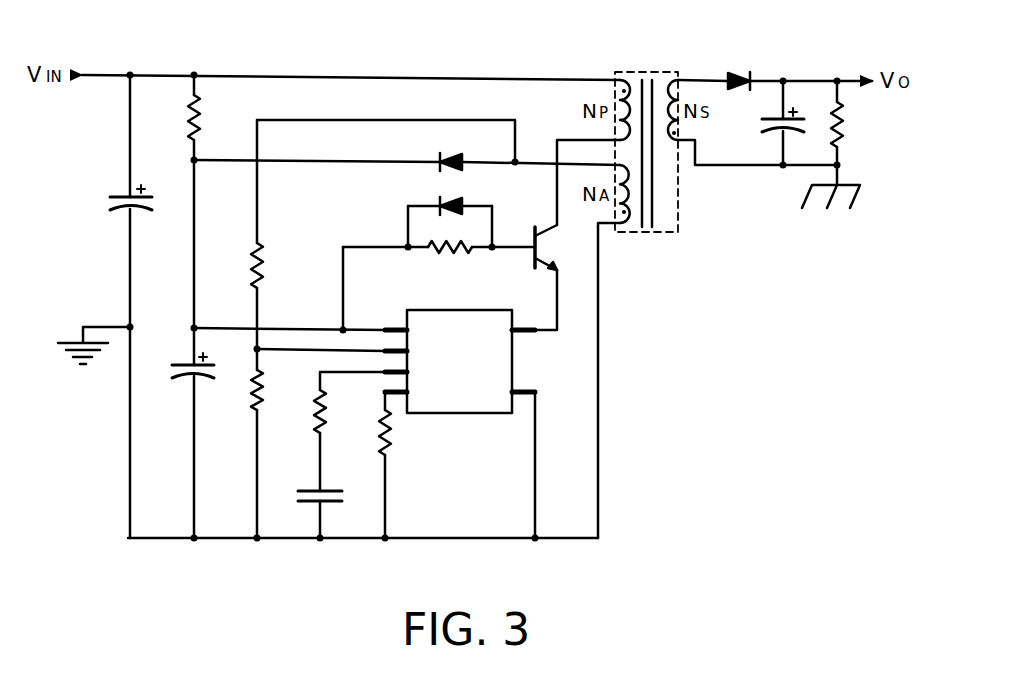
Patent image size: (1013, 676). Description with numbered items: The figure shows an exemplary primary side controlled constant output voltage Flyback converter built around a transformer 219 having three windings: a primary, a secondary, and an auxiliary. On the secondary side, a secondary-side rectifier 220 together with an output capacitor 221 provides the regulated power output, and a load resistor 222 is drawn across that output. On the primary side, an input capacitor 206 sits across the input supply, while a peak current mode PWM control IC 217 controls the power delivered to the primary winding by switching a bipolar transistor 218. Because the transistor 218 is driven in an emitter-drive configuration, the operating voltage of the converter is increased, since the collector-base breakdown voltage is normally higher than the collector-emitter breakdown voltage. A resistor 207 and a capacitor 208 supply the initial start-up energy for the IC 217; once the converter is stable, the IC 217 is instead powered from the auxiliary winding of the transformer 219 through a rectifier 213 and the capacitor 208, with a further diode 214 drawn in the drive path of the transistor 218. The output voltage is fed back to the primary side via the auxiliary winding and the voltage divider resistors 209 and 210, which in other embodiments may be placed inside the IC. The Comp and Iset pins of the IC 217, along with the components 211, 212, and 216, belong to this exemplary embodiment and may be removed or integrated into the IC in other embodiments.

The input filter capacitor 206 is at (146, 211).
The resistor 207 is at (203, 108).
The capacitor 208 is at (203, 379).
The voltage divider resistor 209 is at (265, 268).
The voltage divider resistor 210 is at (265, 395).
The component 211 is at (328, 415).
The component 212 is at (328, 503).
The rectifier 213 is at (438, 157).
The diode 214 is at (438, 200).
The component 216 is at (445, 253).
The peak current mode PWM control IC 217 is at (458, 309).
The transistor 218 is at (545, 245).
The transformer 219 is at (646, 71).
The secondary-side rectifier 220 is at (736, 72).
The output capacitor 221 is at (778, 133).
The load resistor 222 is at (845, 118).